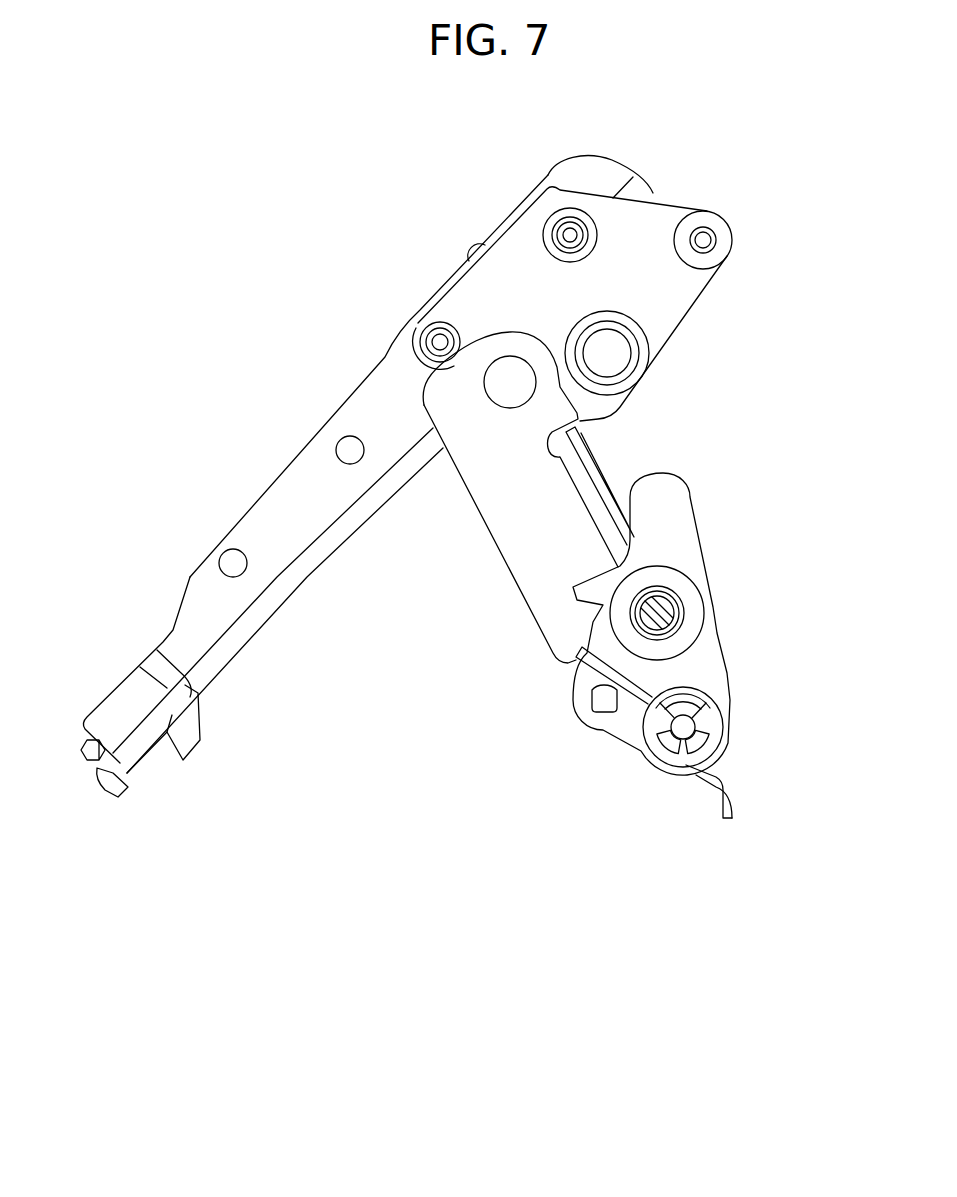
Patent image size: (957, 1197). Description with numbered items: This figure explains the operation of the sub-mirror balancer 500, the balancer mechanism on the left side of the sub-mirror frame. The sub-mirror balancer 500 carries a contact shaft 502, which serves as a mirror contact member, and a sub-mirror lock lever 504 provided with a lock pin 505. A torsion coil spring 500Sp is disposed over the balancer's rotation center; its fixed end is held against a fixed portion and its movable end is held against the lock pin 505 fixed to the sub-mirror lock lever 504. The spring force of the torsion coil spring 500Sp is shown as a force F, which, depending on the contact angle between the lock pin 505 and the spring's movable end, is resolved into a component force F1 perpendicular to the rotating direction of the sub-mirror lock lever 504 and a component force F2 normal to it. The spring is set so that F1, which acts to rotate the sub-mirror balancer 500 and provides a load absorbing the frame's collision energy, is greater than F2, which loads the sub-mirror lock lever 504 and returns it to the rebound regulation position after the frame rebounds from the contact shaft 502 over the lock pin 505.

The sub-mirror balancer 500 is at (668, 536).
The contact shaft 502 is at (667, 612).
The sub-mirror lock lever 504 is at (573, 597).
The lock pin 505 is at (612, 700).
The torsion coil spring 500Sp is at (702, 778).
The force F is at (612, 697).
The component force F1 is at (612, 697).
The component force F2 is at (437, 947).